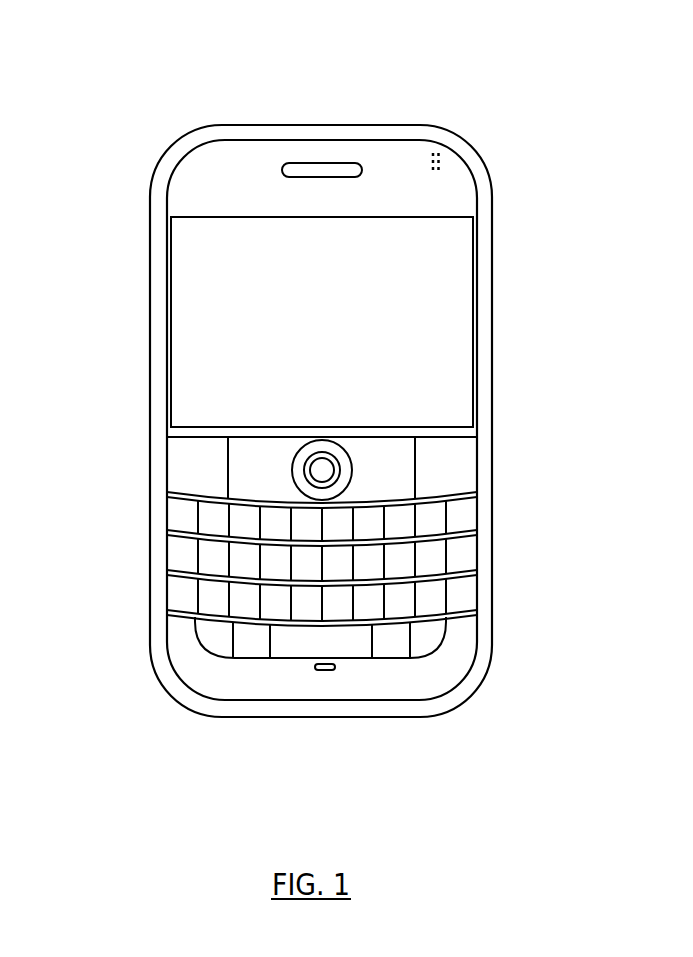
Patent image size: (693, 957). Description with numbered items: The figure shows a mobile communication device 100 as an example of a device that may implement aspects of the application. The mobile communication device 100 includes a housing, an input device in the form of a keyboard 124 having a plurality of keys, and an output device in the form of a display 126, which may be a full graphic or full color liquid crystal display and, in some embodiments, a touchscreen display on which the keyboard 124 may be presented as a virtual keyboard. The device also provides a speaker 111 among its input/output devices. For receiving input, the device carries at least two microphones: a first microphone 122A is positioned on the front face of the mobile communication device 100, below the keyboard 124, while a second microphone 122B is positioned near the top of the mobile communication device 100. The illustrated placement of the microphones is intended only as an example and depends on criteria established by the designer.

The mobile communication device 100 is at (563, 113).
The speaker 111 is at (283, 163).
The microphone 122A is at (325, 672).
The second microphone 122B is at (442, 153).
The keyboard 124 is at (172, 533).
The display 126 is at (331, 340).